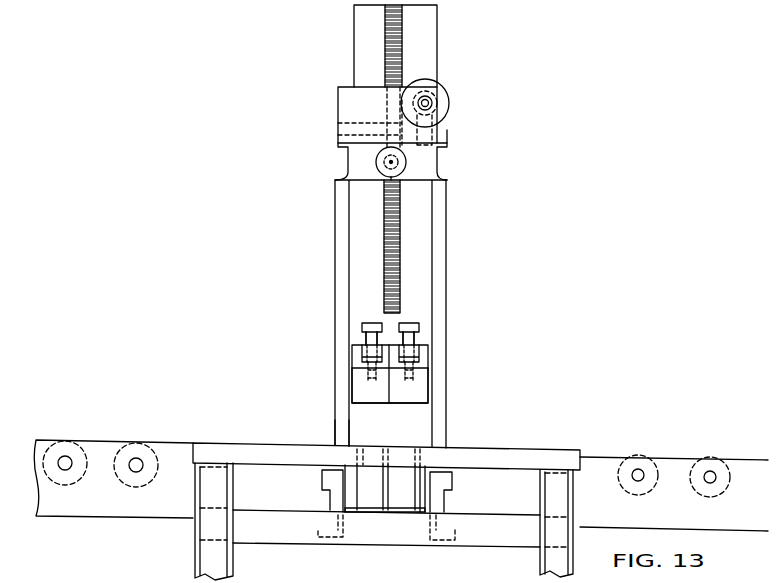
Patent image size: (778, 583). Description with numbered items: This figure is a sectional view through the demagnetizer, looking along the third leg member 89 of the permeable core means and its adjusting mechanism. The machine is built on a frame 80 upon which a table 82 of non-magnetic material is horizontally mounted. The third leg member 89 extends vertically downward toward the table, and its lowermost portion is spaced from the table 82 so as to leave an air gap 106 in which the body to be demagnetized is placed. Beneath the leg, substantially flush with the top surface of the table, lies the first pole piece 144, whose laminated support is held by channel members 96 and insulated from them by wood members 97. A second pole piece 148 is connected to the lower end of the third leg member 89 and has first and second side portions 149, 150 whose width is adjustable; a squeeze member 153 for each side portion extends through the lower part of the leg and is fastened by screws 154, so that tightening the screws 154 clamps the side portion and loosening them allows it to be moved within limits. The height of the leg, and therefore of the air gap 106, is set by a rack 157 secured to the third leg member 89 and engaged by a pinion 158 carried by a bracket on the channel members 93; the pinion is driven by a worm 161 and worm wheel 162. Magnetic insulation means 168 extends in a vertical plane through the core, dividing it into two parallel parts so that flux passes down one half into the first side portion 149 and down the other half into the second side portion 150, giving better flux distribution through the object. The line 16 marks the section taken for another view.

The section line 16- 16 is at (213, 408).
The frame 80 is at (222, 563).
The table 82 is at (492, 455).
The third leg member 89 is at (422, 226).
The channel members 93 is at (347, 160).
The channel members 96 is at (323, 470).
The wood members 97 is at (420, 508).
The air gap 106 is at (340, 421).
The first pole piece 144 is at (373, 453).
The second pole piece 148 is at (417, 393).
The first side portion 149 is at (353, 378).
The second side portion 150 is at (420, 380).
The squeeze member 153 is at (365, 345).
The screws 154 is at (407, 323).
The rack 157 is at (386, 210).
The pinion 158 is at (400, 125).
The worm 161 is at (450, 103).
The worm wheel 162 is at (420, 137).
The magnetic insulation means 168 is at (388, 498).